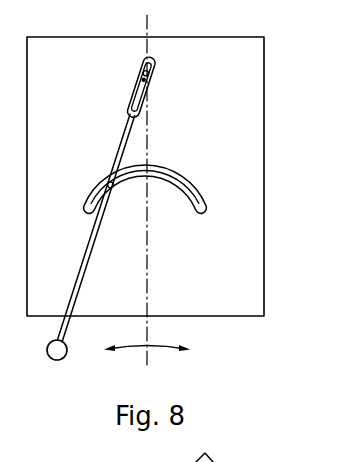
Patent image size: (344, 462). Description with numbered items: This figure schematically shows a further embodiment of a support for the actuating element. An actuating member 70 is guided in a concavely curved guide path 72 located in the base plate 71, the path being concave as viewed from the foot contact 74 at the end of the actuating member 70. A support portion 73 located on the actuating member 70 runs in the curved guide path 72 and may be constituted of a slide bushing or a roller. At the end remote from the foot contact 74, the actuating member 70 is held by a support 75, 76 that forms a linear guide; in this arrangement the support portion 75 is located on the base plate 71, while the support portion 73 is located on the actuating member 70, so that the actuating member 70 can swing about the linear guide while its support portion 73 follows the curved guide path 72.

The actuating member 70 is at (84, 280).
The base plate 71 is at (258, 97).
The concavely curved guide path 72 is at (180, 176).
The support portion 73 is at (114, 190).
The foot contact 74 is at (50, 343).
The support portion 75 is at (142, 81).
The support 76 is at (157, 74).